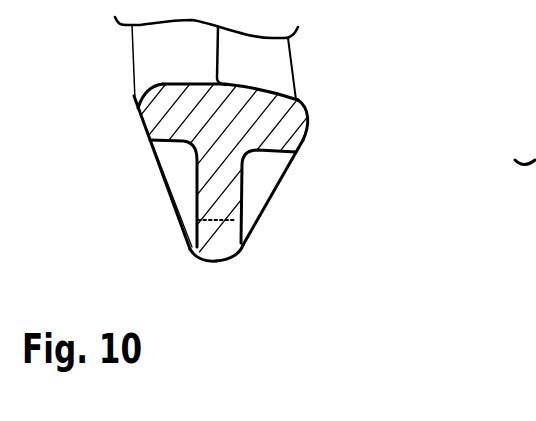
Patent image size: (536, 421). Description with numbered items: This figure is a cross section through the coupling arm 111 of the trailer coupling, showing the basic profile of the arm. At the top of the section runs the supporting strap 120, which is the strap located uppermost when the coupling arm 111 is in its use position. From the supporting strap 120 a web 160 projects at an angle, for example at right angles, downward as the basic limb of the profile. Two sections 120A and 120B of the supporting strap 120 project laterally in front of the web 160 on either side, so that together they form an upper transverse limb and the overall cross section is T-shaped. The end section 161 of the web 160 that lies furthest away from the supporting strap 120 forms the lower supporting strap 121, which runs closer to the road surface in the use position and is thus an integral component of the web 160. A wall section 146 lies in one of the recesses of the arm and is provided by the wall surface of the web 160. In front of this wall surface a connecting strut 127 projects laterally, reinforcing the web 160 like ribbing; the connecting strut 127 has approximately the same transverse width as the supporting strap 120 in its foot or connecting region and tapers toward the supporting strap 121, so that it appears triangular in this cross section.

The coupling arm 111 is at (312, 92).
The supporting strap 120 is at (300, 122).
The section of the supporting strap 120A is at (153, 117).
The section of the supporting strap 120B is at (293, 110).
The supporting strap 121 is at (232, 244).
The connecting strut 127 is at (178, 183).
The wall section 146 is at (233, 199).
The web 160 is at (226, 180).
The end section of the web 161 is at (210, 250).